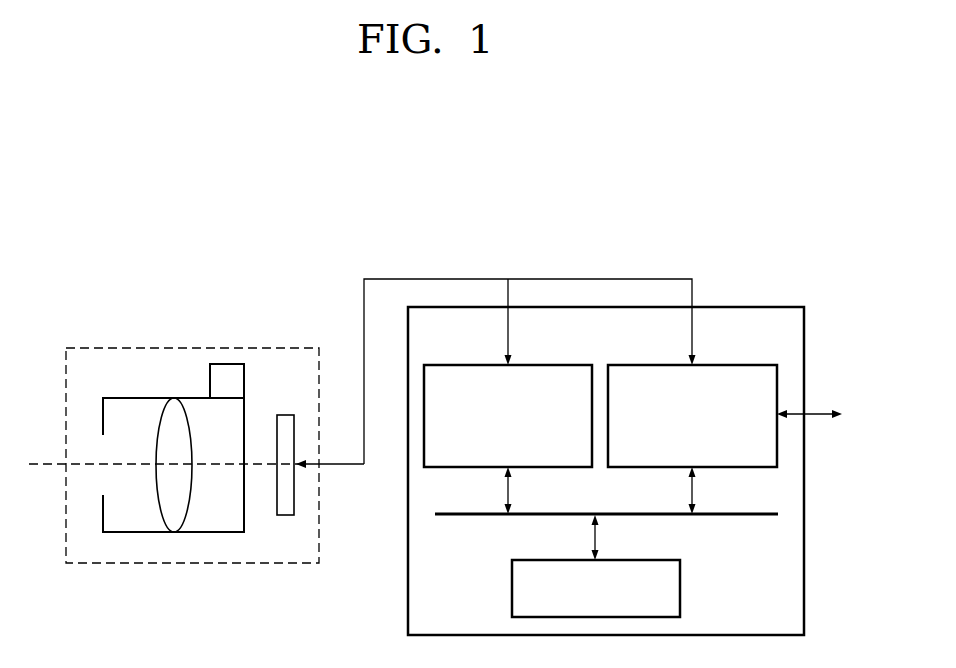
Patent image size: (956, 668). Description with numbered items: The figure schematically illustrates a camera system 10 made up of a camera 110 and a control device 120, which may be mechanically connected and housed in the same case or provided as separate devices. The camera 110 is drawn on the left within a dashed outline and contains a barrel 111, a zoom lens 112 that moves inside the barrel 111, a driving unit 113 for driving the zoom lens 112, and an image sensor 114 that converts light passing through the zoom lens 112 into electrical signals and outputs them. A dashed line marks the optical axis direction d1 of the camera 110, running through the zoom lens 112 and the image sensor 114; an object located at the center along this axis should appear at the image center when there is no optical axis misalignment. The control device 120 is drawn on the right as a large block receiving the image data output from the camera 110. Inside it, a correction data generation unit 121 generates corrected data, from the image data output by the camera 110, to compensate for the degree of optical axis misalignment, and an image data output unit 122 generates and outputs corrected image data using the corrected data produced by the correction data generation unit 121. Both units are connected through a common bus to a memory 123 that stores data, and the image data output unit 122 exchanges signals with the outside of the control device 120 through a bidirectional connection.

The camera system 10 is at (782, 225).
The optical axis direction d1 is at (42, 462).
The camera 110 is at (91, 348).
The barrel 111 is at (216, 532).
The zoom lens 112 is at (174, 417).
The driving unit 113 is at (225, 380).
The image sensor 114 is at (287, 417).
The control device 120 is at (712, 306).
The correction data generation unit 121 is at (525, 365).
The image data output unit 122 is at (708, 365).
The memory 123 is at (620, 560).